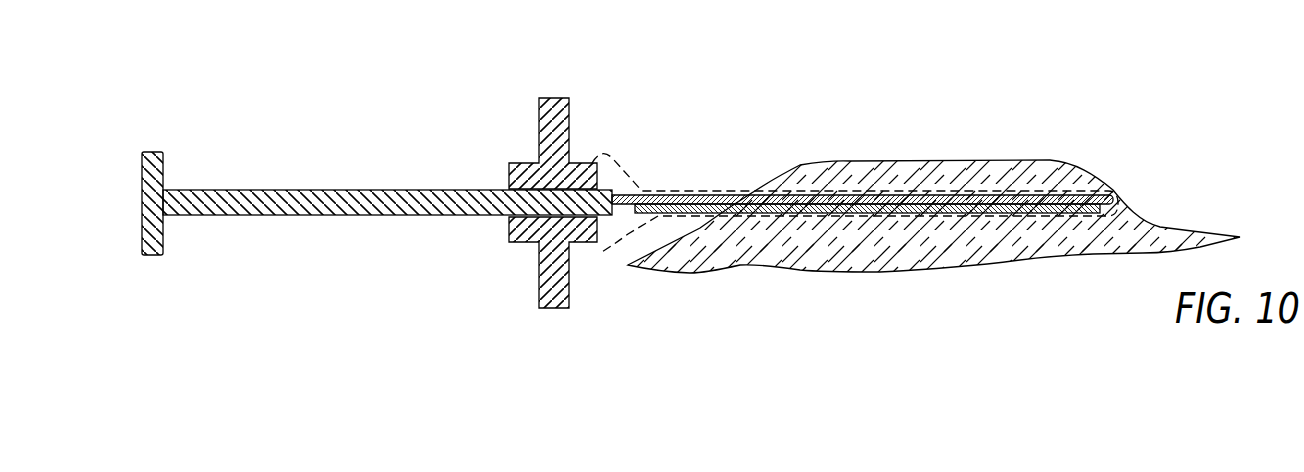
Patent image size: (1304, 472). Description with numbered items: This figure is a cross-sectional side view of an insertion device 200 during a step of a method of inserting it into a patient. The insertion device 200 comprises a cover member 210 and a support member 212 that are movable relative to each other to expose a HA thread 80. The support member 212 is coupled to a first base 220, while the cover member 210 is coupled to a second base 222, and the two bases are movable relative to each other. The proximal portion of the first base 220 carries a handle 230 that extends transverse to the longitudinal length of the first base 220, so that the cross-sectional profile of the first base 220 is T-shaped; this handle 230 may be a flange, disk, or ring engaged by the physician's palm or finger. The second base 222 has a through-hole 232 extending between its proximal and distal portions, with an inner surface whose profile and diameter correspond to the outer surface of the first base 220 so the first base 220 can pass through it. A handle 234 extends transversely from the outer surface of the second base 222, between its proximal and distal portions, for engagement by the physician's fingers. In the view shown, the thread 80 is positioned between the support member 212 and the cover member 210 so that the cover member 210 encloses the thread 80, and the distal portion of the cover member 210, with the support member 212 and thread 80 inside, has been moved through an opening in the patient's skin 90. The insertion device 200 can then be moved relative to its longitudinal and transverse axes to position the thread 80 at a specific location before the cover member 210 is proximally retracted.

The insertion device 200 is at (696, 86).
The handle 230 is at (142, 232).
The first base 220 is at (328, 189).
The second base 222 is at (538, 123).
The handle 234 is at (560, 108).
The through-hole 232 is at (508, 222).
The support member 212 is at (700, 192).
The cover member 210 is at (590, 248).
The skin 90 is at (1003, 160).
The HA thread 80 is at (1055, 206).